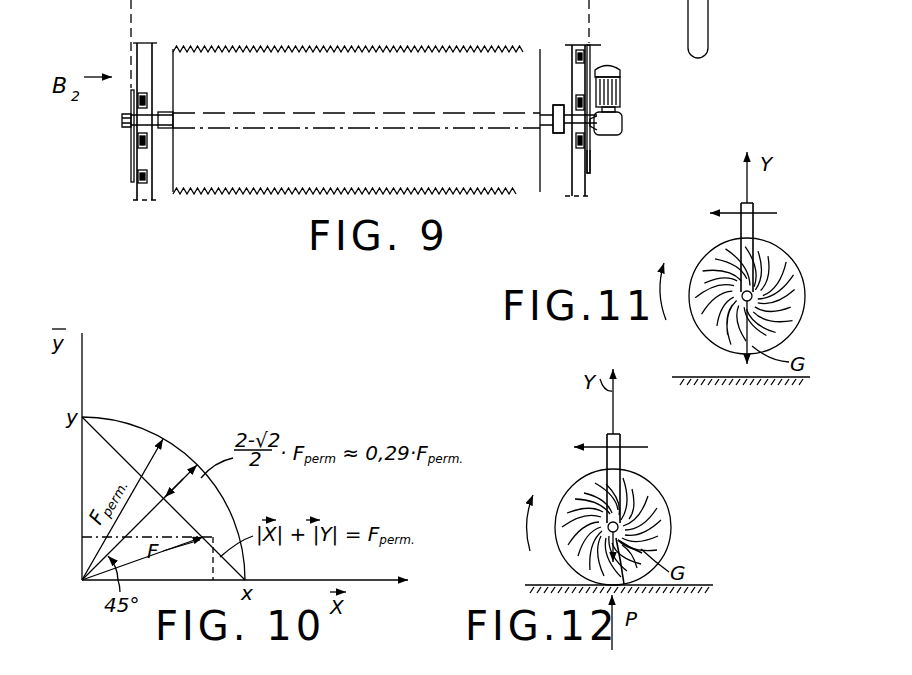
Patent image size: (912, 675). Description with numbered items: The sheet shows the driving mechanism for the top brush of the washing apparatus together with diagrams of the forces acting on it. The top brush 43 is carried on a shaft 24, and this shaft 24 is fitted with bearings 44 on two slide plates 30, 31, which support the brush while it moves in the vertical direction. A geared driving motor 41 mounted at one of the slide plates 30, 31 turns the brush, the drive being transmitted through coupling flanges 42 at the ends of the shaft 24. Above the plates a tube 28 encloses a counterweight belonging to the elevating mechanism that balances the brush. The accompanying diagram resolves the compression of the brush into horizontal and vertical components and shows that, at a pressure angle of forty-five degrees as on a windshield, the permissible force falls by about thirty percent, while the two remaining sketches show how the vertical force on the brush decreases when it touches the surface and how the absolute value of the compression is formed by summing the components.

The shaft 24 is at (407, 125).
The tube 28 is at (690, 10).
The slide plate 30 is at (590, 170).
The slide plate 31 is at (126, 166).
The geared driving motor 41 is at (622, 83).
The coupling flange 42 is at (562, 135).
The brush 43 is at (292, 62).
The bearing 44 is at (122, 123).